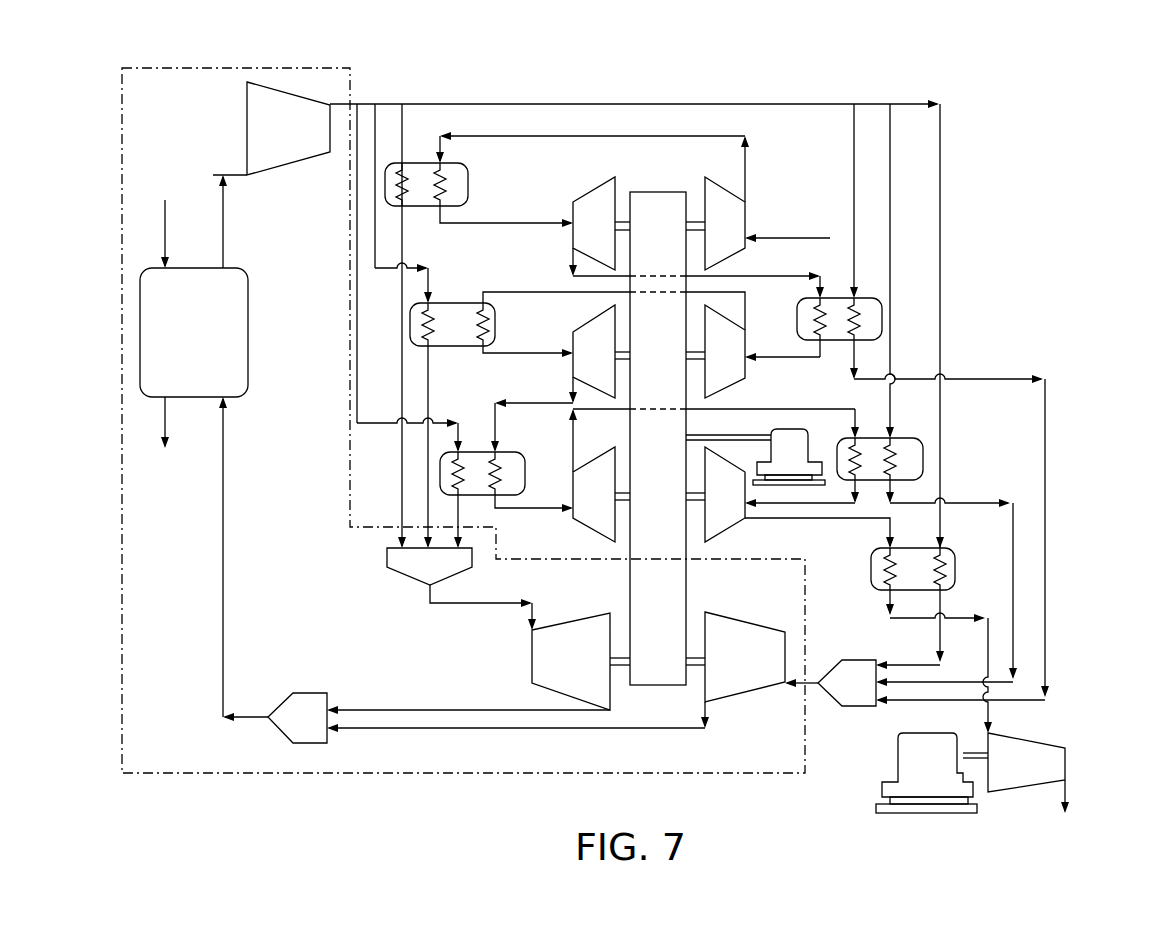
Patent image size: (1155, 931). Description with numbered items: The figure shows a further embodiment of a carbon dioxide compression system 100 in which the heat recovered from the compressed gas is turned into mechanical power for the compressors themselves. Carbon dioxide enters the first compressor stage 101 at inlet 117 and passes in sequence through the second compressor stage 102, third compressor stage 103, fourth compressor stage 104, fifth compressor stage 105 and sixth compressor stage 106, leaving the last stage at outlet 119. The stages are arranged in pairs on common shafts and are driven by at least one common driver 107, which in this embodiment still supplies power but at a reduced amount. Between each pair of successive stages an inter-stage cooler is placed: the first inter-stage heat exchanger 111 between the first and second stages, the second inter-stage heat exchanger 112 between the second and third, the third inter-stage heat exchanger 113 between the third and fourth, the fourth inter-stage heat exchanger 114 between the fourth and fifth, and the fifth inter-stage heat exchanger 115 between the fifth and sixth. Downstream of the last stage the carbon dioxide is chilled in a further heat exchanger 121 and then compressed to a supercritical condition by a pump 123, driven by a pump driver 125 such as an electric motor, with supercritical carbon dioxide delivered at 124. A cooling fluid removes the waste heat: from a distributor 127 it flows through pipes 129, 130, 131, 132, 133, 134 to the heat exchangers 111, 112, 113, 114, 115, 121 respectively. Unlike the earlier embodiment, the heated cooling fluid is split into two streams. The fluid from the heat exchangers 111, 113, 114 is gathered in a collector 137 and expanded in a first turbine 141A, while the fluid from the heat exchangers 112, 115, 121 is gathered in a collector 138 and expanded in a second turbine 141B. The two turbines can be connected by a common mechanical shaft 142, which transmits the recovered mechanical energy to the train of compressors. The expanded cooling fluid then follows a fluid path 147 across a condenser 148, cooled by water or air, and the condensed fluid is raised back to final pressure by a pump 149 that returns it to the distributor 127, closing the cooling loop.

The carbon dioxide compression system 100 is at (910, 70).
The first compressor stage 101 is at (718, 188).
The second compressor stage 102 is at (595, 195).
The third compressor stage 103 is at (740, 380).
The fourth compressor stage 104 is at (585, 325).
The fifth compressor stage 105 is at (582, 526).
The sixth compressor stage 106 is at (720, 528).
The common driver 107 is at (802, 452).
The first inter-stage heat exchanger 111 is at (469, 184).
The second inter-stage heat exchanger 112 is at (822, 296).
The third inter-stage heat exchanger 113 is at (453, 303).
The fourth inter-stage heat exchanger 114 is at (520, 452).
The fifth inter-stage heat exchanger 115 is at (905, 436).
The carbon dioxide inlet 117 is at (788, 237).
The carbon dioxide outlet 119 is at (822, 520).
The further heat exchanger 121 is at (940, 546).
The pump 123 is at (1040, 740).
The supercritical carbon dioxide delivery point 124 is at (1067, 786).
The pump driver 125 is at (898, 746).
The distributor 127 is at (520, 104).
The pipe 129 is at (404, 118).
The pipe 130 is at (852, 166).
The pipe 131 is at (406, 266).
The pipe 132 is at (360, 423).
The pipe 133 is at (893, 258).
The pipe 134 is at (942, 360).
The collector 137 is at (387, 562).
The collector 138 is at (846, 660).
The first turbine 141A is at (532, 660).
The second turbine 141B is at (742, 630).
The common mechanical shaft 142 is at (620, 683).
The fluid path 147 is at (224, 216).
The condenser 148 is at (248, 327).
The pump 149 is at (247, 122).